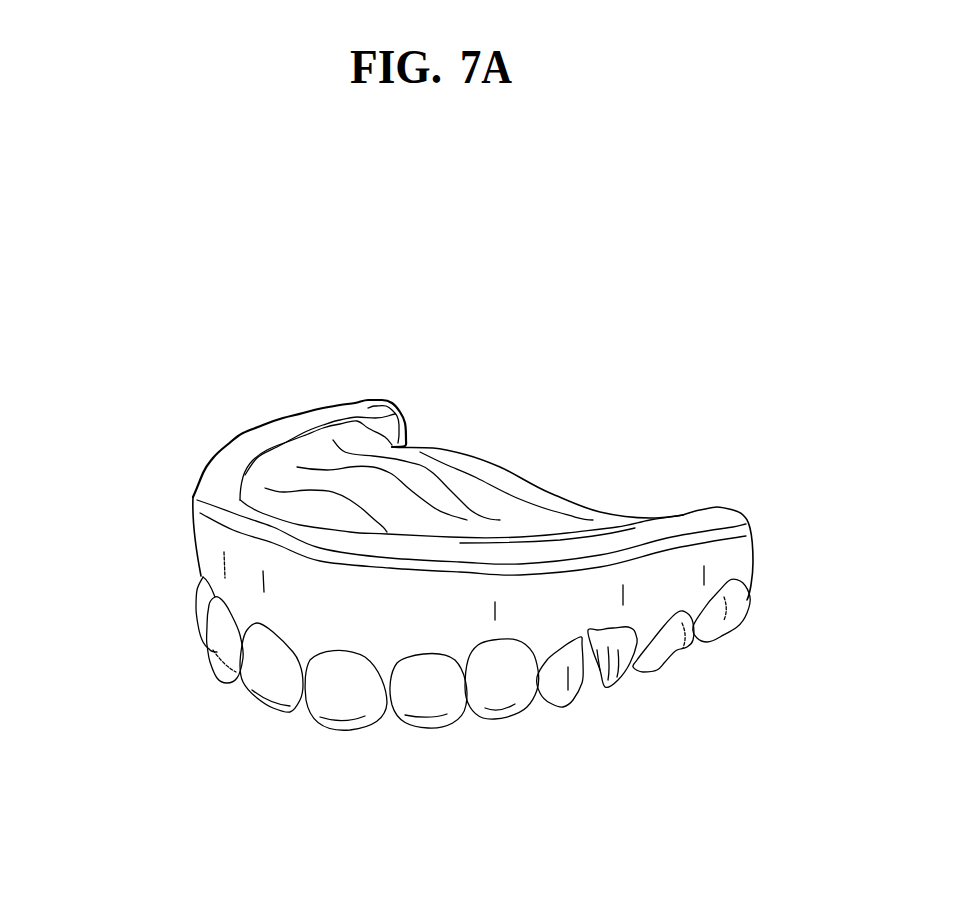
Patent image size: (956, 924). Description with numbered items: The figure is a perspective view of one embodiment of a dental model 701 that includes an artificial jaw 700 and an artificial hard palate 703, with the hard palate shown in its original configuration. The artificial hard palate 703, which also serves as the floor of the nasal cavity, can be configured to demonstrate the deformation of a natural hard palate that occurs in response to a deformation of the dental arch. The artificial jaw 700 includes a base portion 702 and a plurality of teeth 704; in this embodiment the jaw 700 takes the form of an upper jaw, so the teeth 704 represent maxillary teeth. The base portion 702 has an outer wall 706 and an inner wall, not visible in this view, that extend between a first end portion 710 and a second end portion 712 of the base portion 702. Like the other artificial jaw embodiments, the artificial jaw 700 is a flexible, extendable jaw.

The artificial jaw 700 is at (480, 288).
The dental model 701 is at (109, 290).
The base portion 702 is at (318, 628).
The artificial hard palate 703 is at (551, 493).
The teeth 704 is at (347, 740).
The outer wall 706 is at (604, 688).
The first end portion 710 is at (407, 413).
The second end portion 712 is at (746, 560).